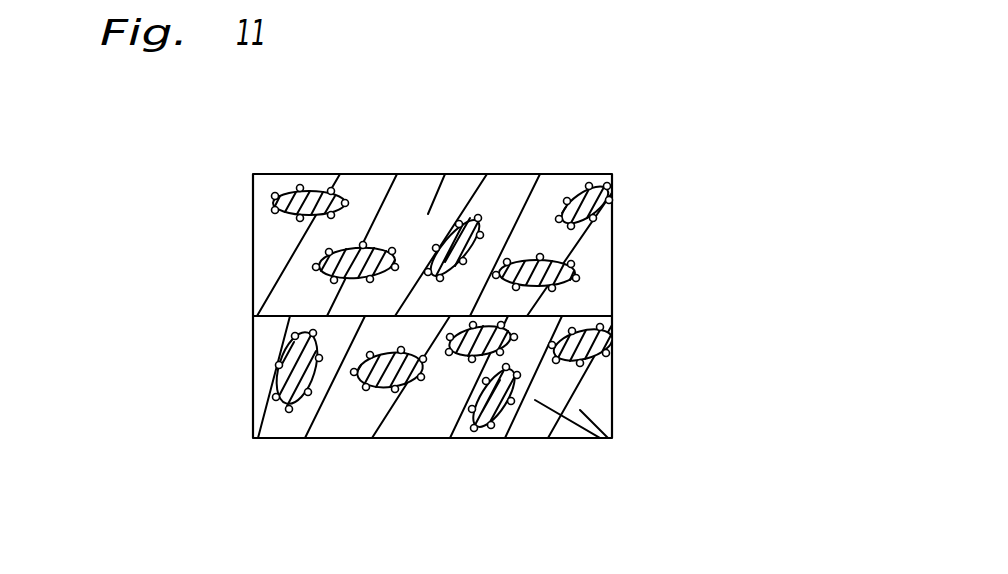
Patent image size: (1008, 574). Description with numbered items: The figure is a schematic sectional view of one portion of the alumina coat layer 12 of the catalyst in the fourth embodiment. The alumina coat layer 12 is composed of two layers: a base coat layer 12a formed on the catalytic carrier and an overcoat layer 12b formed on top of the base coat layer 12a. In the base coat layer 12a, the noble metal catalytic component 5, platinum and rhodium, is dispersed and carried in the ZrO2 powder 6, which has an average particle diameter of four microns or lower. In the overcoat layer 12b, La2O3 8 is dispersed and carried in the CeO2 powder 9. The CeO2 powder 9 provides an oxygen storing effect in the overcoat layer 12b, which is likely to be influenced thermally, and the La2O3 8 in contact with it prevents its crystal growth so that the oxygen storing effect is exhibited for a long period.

The noble metal catalytic component 5 is at (276, 362).
The ZrO2 powder 6 is at (278, 385).
The La2O3 8 is at (305, 200).
The CeO2 powder 9 is at (302, 203).
The alumina coat layer 12 is at (600, 267).
The base coat layer 12a is at (612, 440).
The overcoat layer 12b is at (532, 205).